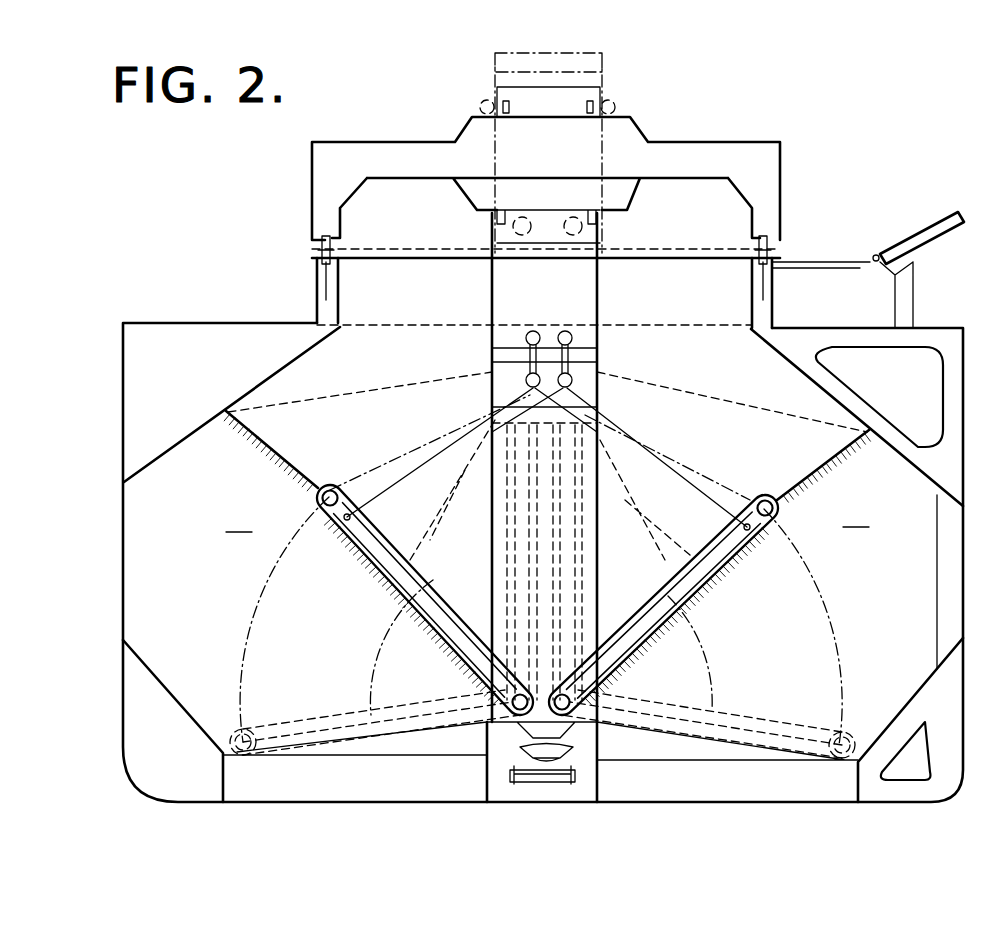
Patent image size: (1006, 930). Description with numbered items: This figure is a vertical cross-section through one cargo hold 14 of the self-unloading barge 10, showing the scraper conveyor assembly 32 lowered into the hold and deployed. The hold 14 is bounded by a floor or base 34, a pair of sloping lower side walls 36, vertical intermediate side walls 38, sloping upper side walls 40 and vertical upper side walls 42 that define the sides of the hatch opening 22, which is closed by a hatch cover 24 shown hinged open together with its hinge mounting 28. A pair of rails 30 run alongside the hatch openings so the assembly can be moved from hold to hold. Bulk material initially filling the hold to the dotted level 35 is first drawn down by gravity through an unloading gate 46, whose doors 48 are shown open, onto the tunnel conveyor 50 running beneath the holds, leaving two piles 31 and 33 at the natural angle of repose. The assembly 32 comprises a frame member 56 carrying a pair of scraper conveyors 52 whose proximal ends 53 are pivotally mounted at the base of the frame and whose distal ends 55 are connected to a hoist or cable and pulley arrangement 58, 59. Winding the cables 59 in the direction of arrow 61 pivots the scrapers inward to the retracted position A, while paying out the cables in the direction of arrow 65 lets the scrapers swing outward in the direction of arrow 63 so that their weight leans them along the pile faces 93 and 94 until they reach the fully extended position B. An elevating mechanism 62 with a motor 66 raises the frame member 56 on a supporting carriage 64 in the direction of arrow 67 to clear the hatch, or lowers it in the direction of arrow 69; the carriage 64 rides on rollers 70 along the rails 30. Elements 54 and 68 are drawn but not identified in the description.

The self-unloading barge 10 is at (935, 323).
The cargo hold 14 is at (940, 553).
The hatch opening 22 is at (398, 252).
The hatch cover 24 is at (913, 228).
The hinged hatch cover 28 is at (913, 270).
The rails 30 is at (325, 270).
The pile of bulk material 31 is at (238, 520).
The scraper conveyor assembly 32 is at (412, 127).
The pile of bulk material 33 is at (855, 515).
The floor or base 34 is at (375, 755).
The dotted lines representing hold filled to capacity 35 is at (372, 392).
The sloping lower side walls 36 is at (155, 665).
The vertical intermediate side walls 38 is at (125, 533).
The sloping upper side walls 40 is at (285, 372).
The vertical upper side walls 42 is at (338, 298).
The unloading gate 46 is at (520, 730).
The doors 48 is at (575, 738).
The tunnel conveyor 50 is at (510, 770).
The scraper conveyors 52 is at (445, 600).
The proximal end 53 is at (507, 710).
The cable 54 is at (585, 400).
The distal end 55 is at (320, 486).
The frame member 56 is at (600, 340).
The hoist or cable and pulley arrangement 58 is at (565, 331).
The cables 59 is at (440, 460).
The arrow 61 is at (640, 530).
The elevating mechanism 62 is at (470, 130).
The arrow 63 is at (328, 474).
The supporting carriage 64 is at (765, 152).
The arrow 65 is at (364, 495).
The motor 66 is at (628, 130).
The arrow 67 is at (609, 305).
The roller assembly 68 is at (492, 218).
The arrow 69 is at (479, 300).
The rollers 70 is at (312, 250).
The face of pile 93 is at (255, 455).
The face of pile 94 is at (808, 470).
The retracted position A is at (510, 562).
The fully extended position B is at (310, 730).